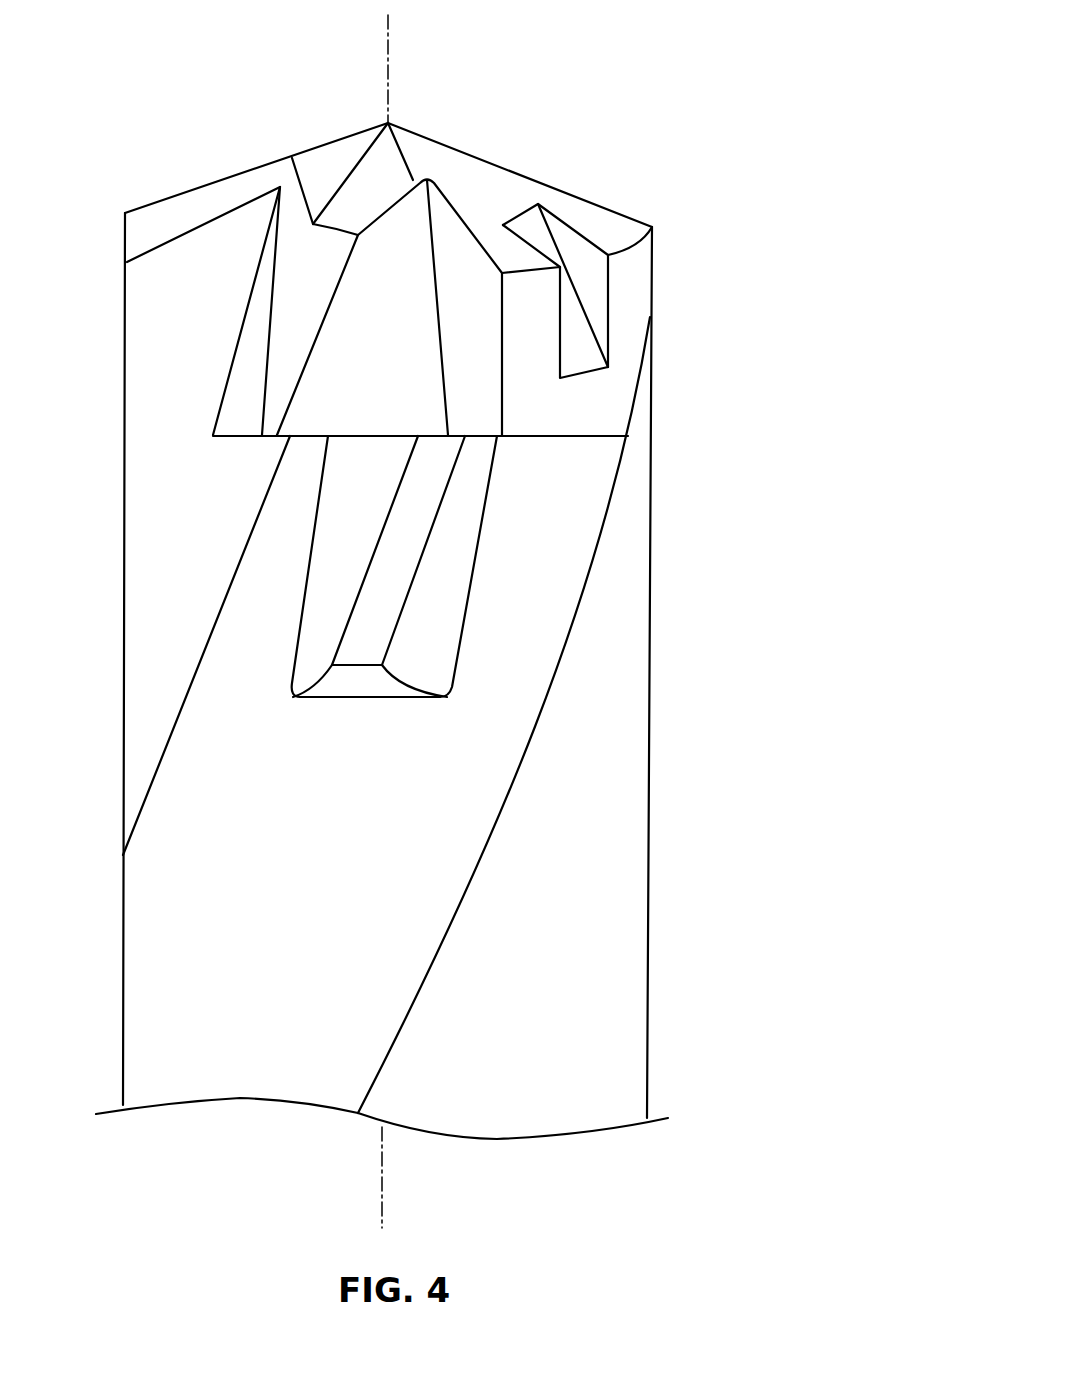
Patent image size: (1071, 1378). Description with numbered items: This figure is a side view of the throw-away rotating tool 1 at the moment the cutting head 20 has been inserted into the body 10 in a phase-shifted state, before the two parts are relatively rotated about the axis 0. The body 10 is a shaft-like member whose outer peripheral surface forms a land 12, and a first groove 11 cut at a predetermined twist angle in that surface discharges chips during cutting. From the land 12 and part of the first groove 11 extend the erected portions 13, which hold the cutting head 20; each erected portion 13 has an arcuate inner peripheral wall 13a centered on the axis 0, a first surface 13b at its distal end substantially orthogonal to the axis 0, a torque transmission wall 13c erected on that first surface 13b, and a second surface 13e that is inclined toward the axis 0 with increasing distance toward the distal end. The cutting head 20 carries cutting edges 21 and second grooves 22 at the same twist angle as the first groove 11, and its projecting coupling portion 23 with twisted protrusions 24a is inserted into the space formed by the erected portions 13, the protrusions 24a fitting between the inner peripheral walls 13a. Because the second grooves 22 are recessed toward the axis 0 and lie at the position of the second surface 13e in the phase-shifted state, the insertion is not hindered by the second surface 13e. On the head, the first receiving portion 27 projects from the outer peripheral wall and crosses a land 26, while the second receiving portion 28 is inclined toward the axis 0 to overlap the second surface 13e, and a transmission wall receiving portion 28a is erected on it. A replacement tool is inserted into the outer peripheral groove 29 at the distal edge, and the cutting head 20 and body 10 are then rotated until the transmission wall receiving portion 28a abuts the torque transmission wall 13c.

The axis 0 is at (388, 70).
The throw-away rotating tool 1 is at (742, 108).
The body 10 is at (722, 572).
The first groove 11 is at (212, 1073).
The land 12 is at (620, 1035).
The erected portion 13 is at (137, 353).
The inner peripheral wall 13a is at (302, 617).
The first surface 13b is at (347, 436).
The torque transmission wall 13c is at (260, 338).
The second surface 13e is at (273, 298).
The cutting head 20 is at (566, 134).
The cutting edge 21 is at (210, 182).
The second groove 22 is at (173, 213).
The projecting coupling portion 23 is at (270, 694).
The protrusion 24a is at (395, 563).
The land 26 is at (625, 300).
The first receiving portion 27 is at (542, 436).
The second receiving portion 28 is at (405, 275).
The transmission wall receiving portion 28a is at (478, 338).
The outer peripheral groove 29 is at (590, 283).